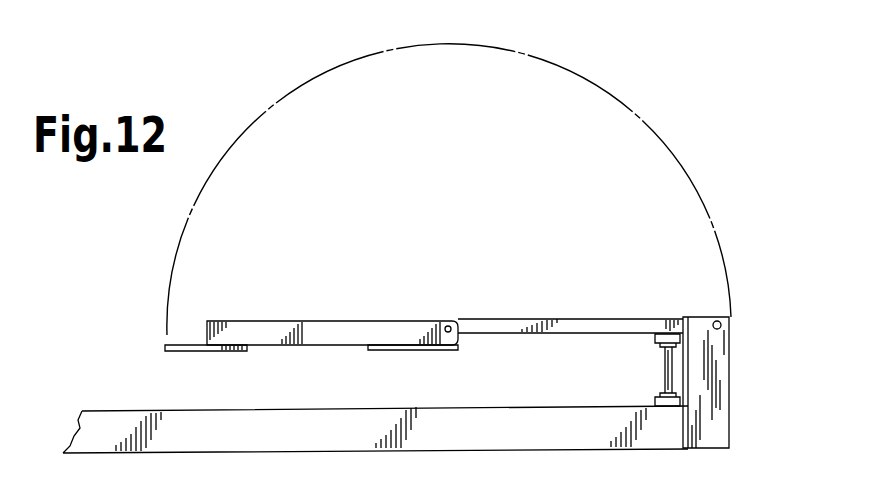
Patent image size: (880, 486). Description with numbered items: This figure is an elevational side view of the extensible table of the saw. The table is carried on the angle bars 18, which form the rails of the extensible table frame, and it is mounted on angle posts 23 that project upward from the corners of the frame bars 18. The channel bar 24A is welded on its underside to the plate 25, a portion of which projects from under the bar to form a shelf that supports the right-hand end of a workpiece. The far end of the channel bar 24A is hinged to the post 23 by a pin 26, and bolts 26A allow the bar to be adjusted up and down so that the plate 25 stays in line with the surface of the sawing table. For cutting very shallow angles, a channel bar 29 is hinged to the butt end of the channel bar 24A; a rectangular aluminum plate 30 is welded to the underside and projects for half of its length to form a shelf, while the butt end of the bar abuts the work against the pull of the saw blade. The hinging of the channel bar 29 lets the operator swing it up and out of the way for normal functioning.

The angle bars 18 is at (312, 425).
The angle posts 23 is at (714, 397).
The channel bar 24A is at (588, 329).
The plate 25 is at (392, 350).
The pin 26 is at (722, 325).
The bolts 26A is at (665, 357).
The channel bar 29 is at (327, 330).
The rectangular aluminum plate 30 is at (176, 350).